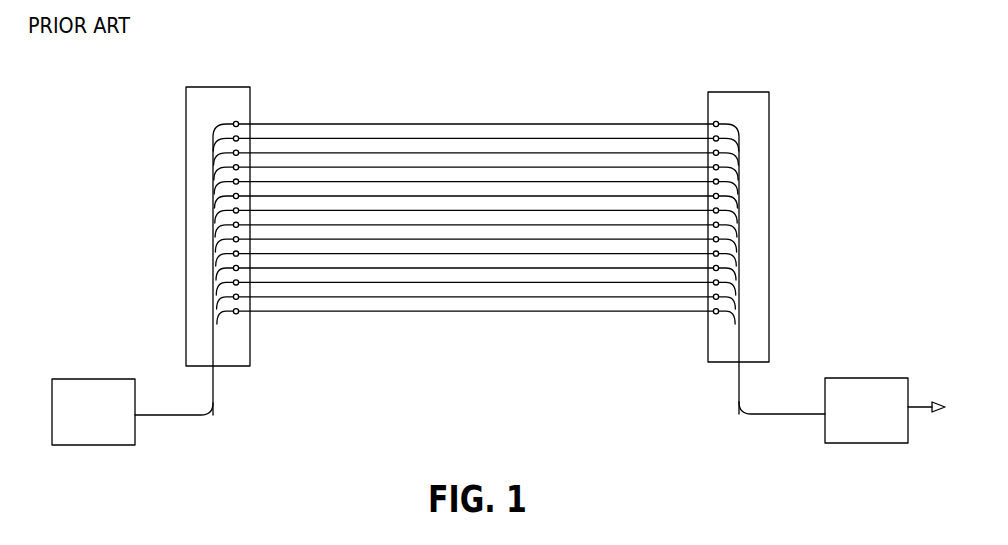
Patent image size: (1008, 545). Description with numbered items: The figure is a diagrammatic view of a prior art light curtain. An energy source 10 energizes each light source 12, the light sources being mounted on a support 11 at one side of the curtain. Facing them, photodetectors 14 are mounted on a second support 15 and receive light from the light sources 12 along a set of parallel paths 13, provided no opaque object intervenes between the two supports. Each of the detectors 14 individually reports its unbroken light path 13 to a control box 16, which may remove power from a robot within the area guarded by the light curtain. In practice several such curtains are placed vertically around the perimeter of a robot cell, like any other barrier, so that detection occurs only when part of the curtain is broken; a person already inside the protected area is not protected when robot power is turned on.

The energy source 10 is at (58, 379).
The support 11 is at (205, 87).
The light source 12 is at (238, 122).
The path 13 is at (375, 122).
The photodetector 14 is at (714, 124).
The support 15 is at (740, 92).
The control box 16 is at (855, 378).